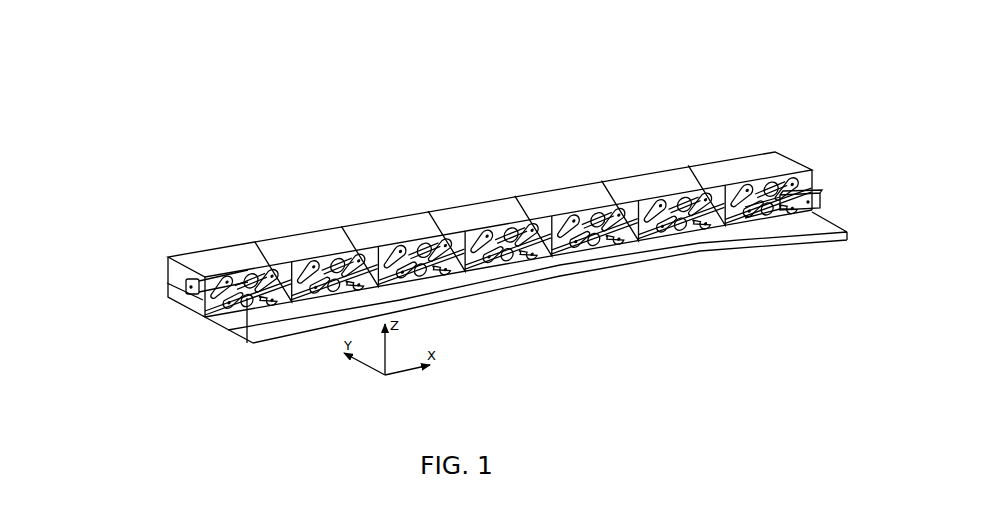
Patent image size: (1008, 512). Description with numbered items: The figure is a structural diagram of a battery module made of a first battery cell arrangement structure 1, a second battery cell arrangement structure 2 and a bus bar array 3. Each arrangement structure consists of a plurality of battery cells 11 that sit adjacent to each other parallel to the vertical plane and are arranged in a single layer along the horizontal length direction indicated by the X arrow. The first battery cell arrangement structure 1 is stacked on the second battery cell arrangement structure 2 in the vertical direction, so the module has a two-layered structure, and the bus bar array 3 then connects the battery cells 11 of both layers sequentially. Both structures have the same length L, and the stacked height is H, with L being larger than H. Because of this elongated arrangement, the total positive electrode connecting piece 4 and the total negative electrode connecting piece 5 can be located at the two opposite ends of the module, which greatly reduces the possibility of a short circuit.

The first battery cell arrangement structure 1 is at (164, 262).
The second battery cell arrangement structure 2 is at (161, 313).
The bus bar array 3 is at (774, 204).
The total positive electrode connecting piece 4 is at (191, 292).
The total negative electrode connecting piece 5 is at (828, 192).
The battery cell 11 is at (227, 262).
The height H is at (249, 323).
The length L is at (513, 284).